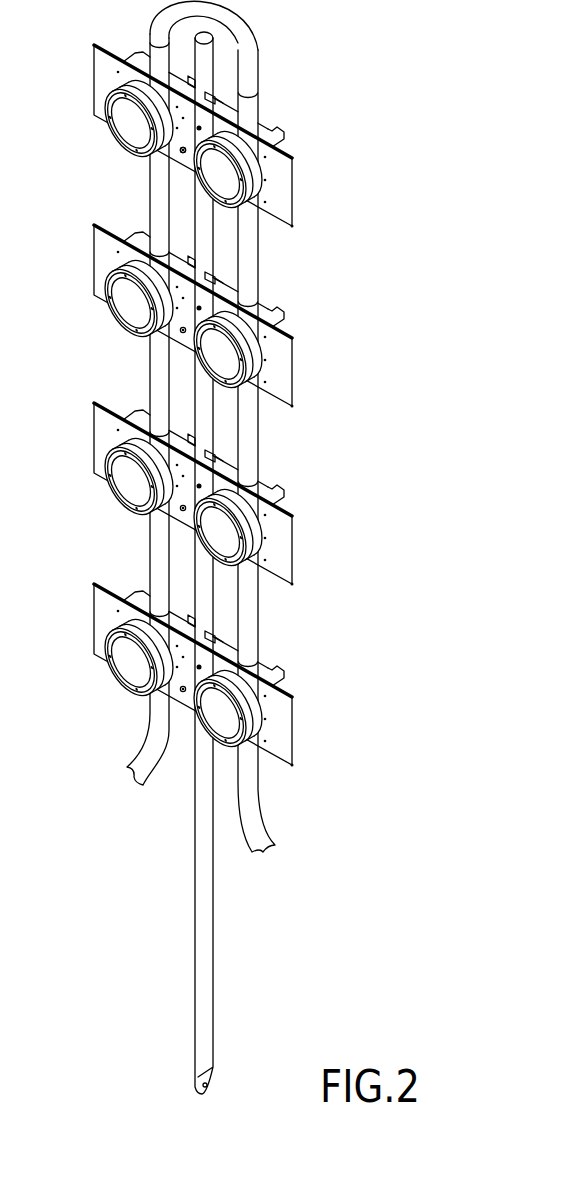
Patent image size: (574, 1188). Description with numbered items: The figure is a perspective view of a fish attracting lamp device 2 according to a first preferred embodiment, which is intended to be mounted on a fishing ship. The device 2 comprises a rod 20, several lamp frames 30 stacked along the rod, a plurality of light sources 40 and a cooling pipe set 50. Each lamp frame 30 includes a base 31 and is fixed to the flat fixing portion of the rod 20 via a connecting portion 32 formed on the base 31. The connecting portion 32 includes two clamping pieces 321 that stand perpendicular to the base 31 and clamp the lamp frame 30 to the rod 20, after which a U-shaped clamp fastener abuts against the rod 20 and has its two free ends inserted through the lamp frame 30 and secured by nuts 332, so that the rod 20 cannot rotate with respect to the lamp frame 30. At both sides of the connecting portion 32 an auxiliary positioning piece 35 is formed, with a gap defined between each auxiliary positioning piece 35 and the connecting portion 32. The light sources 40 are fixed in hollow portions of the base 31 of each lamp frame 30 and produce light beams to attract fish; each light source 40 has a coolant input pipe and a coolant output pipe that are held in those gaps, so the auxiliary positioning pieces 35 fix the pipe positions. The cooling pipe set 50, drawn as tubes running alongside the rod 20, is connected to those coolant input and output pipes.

The fish attracting lamp device 2 is at (183, 963).
The rod 20 is at (202, 913).
The lamp frame 30 is at (263, 316).
The base 31 is at (238, 316).
The connecting portion 32 is at (253, 266).
The clamping piece 321 is at (264, 263).
The nut 332 is at (183, 153).
The auxiliary positioning piece 35 is at (325, 311).
The light source 40 is at (262, 520).
The cooling pipe set 50 is at (252, 62).